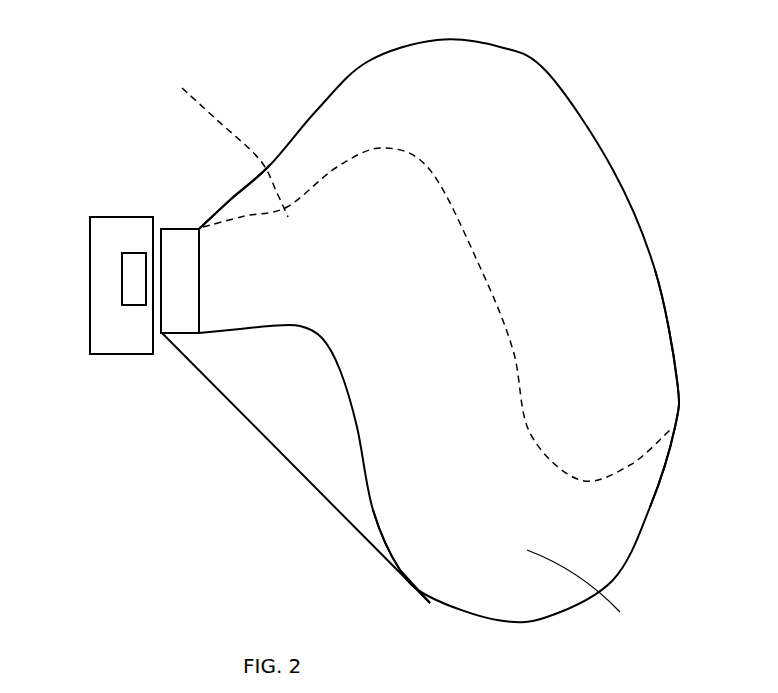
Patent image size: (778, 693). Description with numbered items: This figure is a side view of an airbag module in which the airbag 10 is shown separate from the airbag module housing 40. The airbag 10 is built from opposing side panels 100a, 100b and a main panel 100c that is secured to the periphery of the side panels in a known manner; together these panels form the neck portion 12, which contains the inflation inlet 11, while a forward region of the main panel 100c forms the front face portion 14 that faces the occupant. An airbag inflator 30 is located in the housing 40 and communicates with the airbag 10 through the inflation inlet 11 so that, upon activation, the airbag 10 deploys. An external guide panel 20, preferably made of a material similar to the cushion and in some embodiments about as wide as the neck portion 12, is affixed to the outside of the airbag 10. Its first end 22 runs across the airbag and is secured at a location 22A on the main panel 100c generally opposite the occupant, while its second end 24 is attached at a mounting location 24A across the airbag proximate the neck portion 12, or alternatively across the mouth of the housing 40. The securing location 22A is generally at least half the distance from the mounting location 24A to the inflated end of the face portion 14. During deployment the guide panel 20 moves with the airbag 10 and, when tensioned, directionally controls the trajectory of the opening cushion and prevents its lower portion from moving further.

The airbag 10 is at (595, 208).
The inflation inlet 11 is at (161, 278).
The neck portion 12 is at (253, 237).
The front face portion 14 is at (662, 365).
The external guide panel 20 is at (288, 463).
The first end 22 is at (403, 577).
The securing location 22A is at (413, 560).
The second end 24 is at (165, 338).
The mounting location 24A is at (178, 325).
The airbag inflator 30 is at (130, 255).
The airbag module housing 40 is at (90, 287).
The side panel 100a is at (574, 597).
The side panel 100b is at (207, 142).
The main panel 100c is at (588, 292).